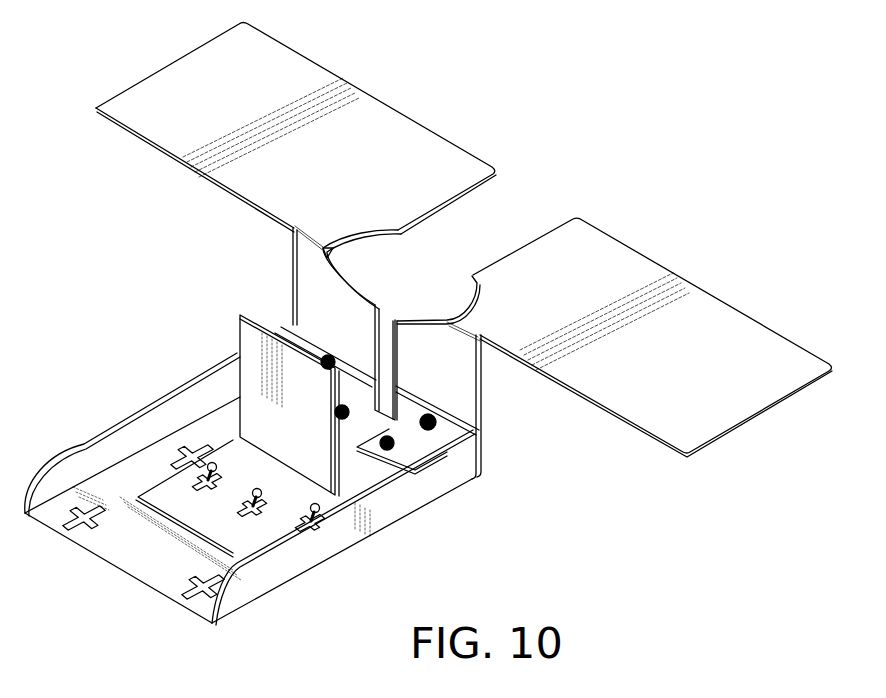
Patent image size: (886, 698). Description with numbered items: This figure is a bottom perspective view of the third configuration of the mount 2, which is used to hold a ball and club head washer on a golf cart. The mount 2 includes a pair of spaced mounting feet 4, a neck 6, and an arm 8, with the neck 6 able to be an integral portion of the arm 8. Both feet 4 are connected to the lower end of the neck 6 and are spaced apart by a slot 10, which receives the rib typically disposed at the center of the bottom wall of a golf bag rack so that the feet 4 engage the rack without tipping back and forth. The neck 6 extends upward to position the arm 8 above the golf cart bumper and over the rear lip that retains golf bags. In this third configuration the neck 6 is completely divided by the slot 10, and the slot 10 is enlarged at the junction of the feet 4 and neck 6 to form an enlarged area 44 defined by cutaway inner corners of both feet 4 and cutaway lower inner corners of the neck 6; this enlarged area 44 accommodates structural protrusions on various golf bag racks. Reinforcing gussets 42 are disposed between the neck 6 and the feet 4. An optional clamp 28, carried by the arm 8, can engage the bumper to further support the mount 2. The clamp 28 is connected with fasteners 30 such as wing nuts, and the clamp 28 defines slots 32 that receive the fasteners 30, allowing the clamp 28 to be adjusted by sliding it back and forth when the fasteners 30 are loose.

The mount 2 is at (150, 286).
The mounting foot 4 is at (375, 125).
The neck 6 is at (305, 258).
The arm 8 is at (153, 568).
The slot 10 is at (507, 220).
The clamp 28 is at (253, 353).
The fastener 30 is at (208, 485).
The slot 32 is at (197, 470).
The reinforcing gusset 42 is at (489, 367).
The enlarged area 44 is at (402, 280).